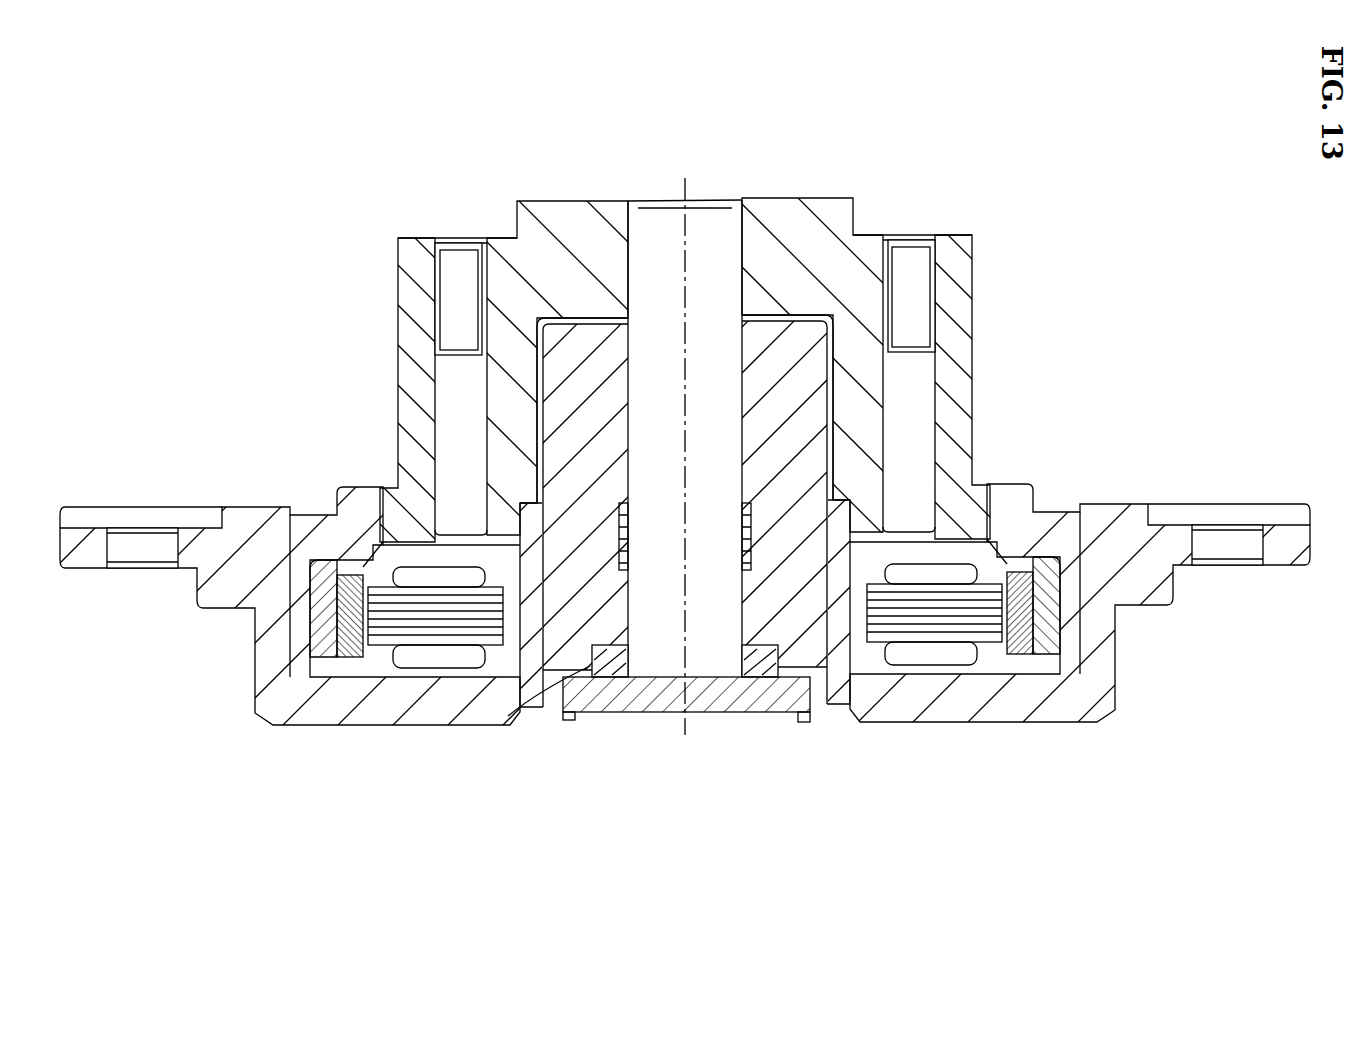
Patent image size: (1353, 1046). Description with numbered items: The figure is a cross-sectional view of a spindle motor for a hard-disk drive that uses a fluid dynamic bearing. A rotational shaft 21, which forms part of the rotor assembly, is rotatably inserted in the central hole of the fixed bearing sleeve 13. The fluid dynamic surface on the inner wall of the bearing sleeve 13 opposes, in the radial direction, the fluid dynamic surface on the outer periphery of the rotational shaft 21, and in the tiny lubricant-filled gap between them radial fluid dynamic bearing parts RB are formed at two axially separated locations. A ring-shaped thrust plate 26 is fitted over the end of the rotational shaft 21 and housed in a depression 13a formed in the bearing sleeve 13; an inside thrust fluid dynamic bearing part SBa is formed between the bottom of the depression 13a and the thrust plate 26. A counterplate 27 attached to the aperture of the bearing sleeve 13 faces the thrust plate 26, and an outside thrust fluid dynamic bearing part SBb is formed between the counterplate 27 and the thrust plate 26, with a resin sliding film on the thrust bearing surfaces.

The bearing sleeve 13 is at (750, 498).
The depression 13a is at (583, 662).
The rotational shaft 21 is at (707, 223).
The radial fluid dynamic bearing parts RB is at (630, 428).
The inside thrust fluid dynamic bearing part SBa is at (752, 645).
The outside thrust fluid dynamic bearing part SBb is at (757, 717).
The thrust plate 26 is at (607, 663).
The counterplate 27 is at (662, 700).